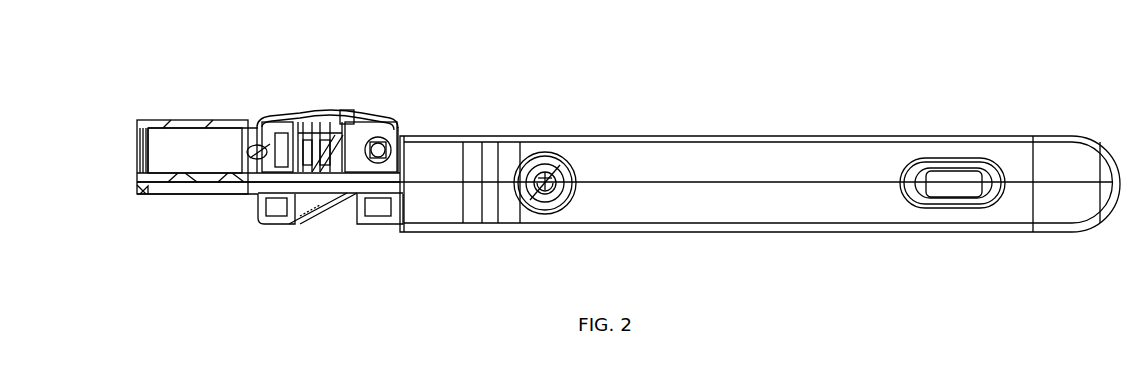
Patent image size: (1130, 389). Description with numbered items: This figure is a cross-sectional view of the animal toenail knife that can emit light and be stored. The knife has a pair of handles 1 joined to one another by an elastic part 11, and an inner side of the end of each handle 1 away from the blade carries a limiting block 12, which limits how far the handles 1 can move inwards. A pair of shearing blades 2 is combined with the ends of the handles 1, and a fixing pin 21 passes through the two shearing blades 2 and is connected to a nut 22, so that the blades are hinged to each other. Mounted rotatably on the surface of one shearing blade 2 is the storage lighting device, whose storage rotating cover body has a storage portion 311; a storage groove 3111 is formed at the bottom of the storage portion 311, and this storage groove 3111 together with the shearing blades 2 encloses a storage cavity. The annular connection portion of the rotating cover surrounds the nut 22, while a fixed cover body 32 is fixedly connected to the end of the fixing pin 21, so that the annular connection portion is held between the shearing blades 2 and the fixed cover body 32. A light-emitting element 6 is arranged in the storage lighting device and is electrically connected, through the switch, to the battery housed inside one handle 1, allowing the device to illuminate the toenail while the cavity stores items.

The handle 1 is at (463, 162).
The elastic part 11 is at (545, 165).
The limiting block 12 is at (952, 190).
The shearing blade 2 is at (235, 180).
The fixing pin 21 is at (308, 223).
The nut 22 is at (343, 116).
The fixed cover body 32 is at (363, 116).
The storage portion 311 is at (190, 122).
The storage groove 3111 is at (173, 153).
The light-emitting element 6 is at (245, 120).